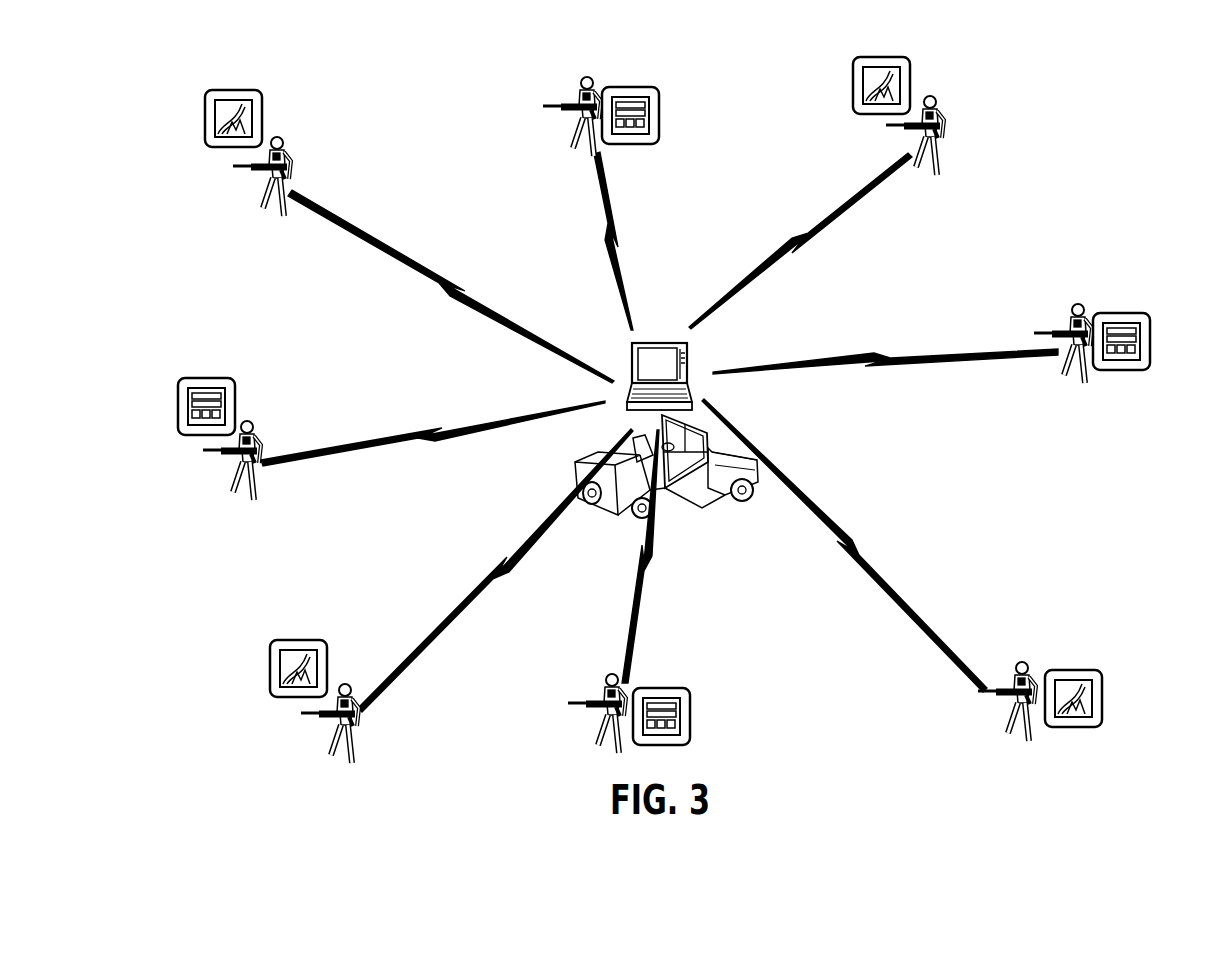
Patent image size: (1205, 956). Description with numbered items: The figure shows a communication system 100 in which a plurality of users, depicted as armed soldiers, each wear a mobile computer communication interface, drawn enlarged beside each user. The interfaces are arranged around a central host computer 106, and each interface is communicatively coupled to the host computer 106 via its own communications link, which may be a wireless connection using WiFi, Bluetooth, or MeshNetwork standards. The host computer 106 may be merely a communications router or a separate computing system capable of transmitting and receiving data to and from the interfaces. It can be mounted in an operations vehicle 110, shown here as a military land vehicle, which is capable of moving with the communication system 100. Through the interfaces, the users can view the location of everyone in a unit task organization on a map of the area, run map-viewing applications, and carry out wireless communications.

The communication system 100 is at (183, 77).
The host computer 106 is at (688, 357).
The operations vehicle 110 is at (702, 508).